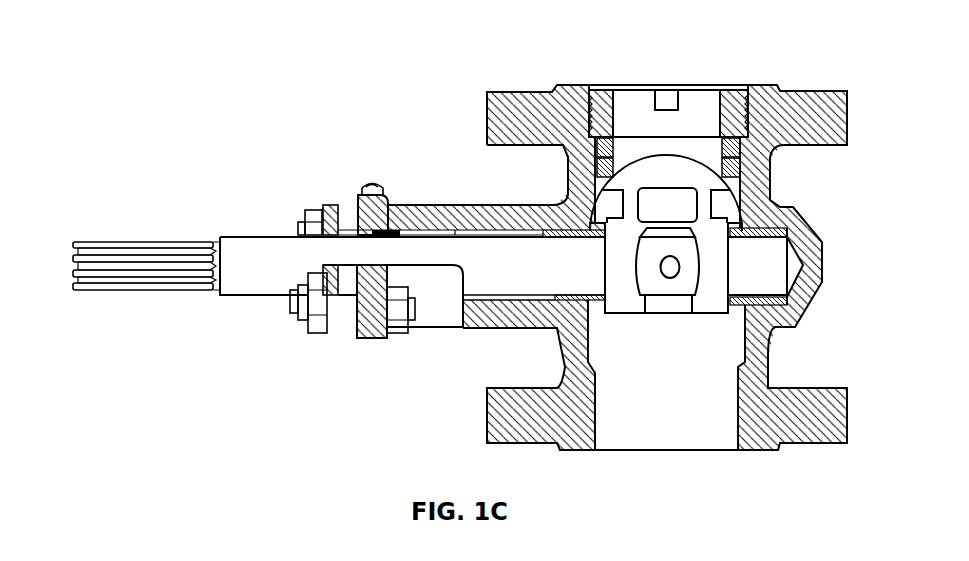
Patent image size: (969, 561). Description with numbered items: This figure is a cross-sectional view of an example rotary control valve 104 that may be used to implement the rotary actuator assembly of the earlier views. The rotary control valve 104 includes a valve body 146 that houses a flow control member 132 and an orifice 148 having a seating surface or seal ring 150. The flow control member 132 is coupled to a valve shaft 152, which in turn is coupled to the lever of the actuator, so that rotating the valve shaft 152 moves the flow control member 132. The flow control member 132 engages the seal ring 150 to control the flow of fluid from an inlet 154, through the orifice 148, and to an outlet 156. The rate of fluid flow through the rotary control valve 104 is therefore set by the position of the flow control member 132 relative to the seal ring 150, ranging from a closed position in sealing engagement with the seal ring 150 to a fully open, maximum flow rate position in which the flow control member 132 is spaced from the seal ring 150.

The rotary control valve 104 is at (276, 50).
The flow control member 132 is at (688, 150).
The valve body 146 is at (487, 418).
The orifice 148 is at (653, 127).
The seal ring 150 is at (748, 156).
The valve shaft 152 is at (267, 236).
The inlet 154 is at (667, 83).
The outlet 156 is at (667, 452).